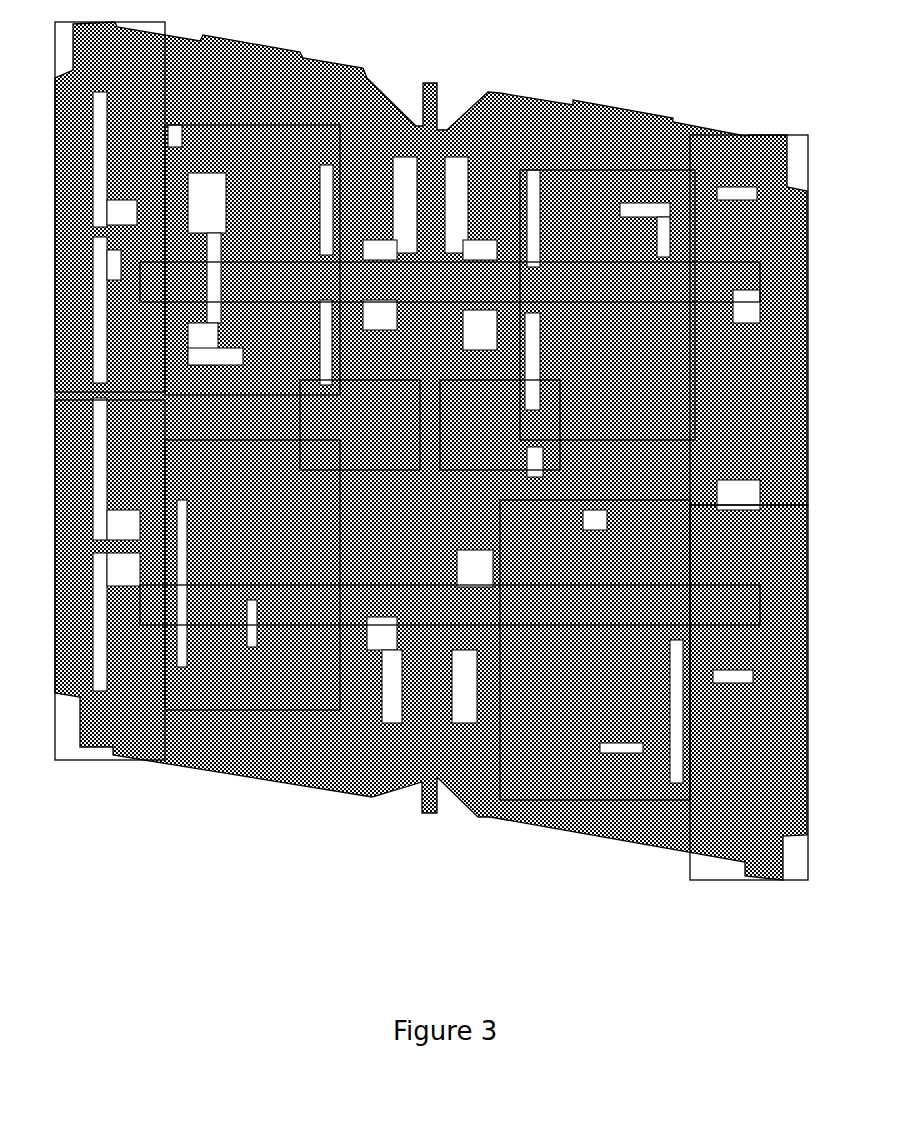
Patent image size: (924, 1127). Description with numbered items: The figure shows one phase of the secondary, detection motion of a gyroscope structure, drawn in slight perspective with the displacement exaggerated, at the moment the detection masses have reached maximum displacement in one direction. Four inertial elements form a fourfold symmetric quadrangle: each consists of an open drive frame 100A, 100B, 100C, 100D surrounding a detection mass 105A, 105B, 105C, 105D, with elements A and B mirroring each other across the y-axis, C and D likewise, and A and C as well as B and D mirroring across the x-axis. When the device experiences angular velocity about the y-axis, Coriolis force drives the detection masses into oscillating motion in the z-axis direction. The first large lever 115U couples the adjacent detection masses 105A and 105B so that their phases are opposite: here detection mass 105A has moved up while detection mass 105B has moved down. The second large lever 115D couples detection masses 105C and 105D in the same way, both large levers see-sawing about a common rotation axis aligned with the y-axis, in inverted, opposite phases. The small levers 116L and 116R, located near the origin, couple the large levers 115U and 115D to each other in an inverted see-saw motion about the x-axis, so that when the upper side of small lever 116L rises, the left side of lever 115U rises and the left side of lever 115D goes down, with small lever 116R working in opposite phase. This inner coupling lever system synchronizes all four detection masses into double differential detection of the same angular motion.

The open drive frame 100A is at (138, 188).
The open drive frame 100B is at (695, 293).
The open drive frame 100C is at (168, 533).
The open drive frame 100D is at (692, 628).
The detection mass 105A is at (305, 211).
The detection mass 105B is at (592, 227).
The detection mass 105C is at (330, 501).
The detection mass 105D is at (568, 581).
The first large lever 115U is at (450, 294).
The second large lever 115D is at (449, 609).
The small lever 116L is at (320, 405).
The small lever 116R is at (562, 388).